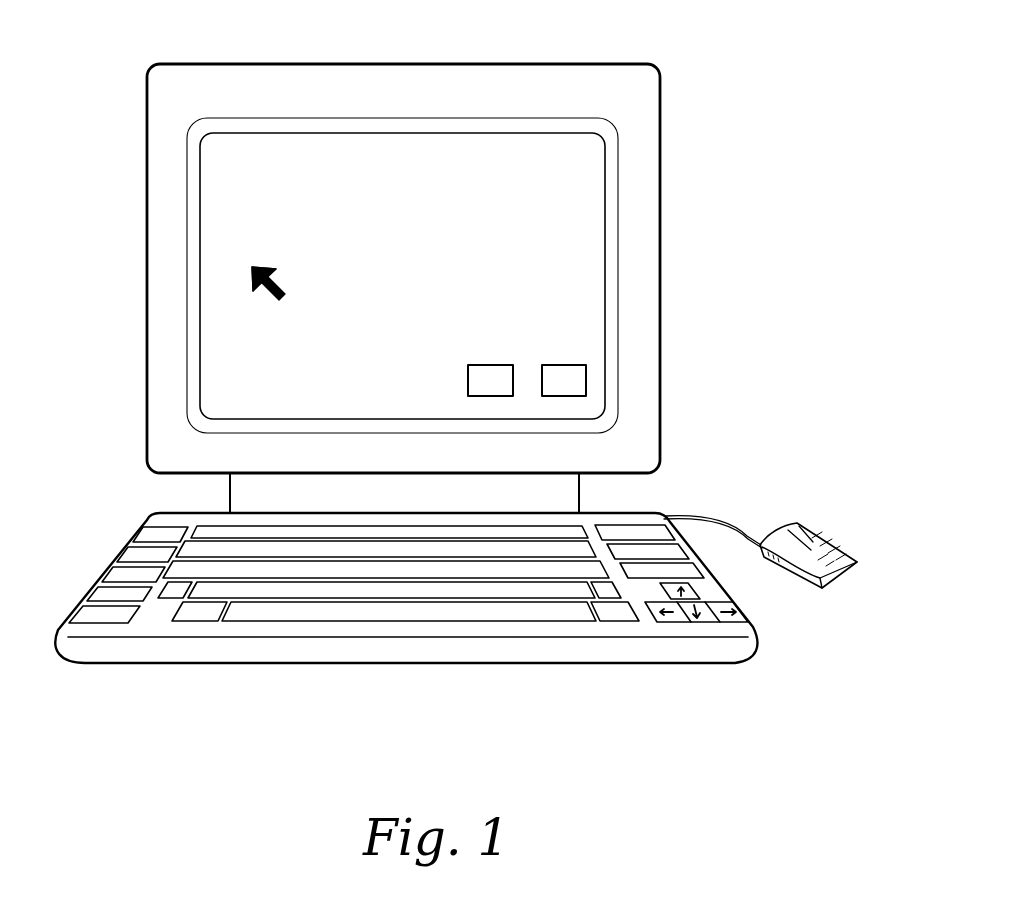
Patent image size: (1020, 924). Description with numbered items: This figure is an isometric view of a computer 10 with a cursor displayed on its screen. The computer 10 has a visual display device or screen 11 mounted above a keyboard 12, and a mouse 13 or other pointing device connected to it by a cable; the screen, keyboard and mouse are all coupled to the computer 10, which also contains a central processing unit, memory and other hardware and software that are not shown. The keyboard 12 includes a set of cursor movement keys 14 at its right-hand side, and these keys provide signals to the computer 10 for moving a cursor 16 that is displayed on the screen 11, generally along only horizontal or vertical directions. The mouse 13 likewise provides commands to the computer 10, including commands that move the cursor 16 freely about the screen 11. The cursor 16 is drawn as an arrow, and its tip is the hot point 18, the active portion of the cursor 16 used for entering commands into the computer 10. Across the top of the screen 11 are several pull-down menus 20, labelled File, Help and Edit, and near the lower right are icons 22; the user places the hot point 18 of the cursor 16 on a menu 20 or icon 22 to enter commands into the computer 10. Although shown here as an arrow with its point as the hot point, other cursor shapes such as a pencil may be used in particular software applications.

The computer 10 is at (642, 512).
The screen 11 is at (573, 191).
The keyboard 12 is at (98, 652).
The mouse 13 is at (837, 533).
The cursor movement keys 14 is at (707, 622).
The cursor 16 is at (263, 266).
The hot point 18 is at (252, 267).
The pull-down menus 20 is at (237, 138).
The icons 22 is at (570, 365).